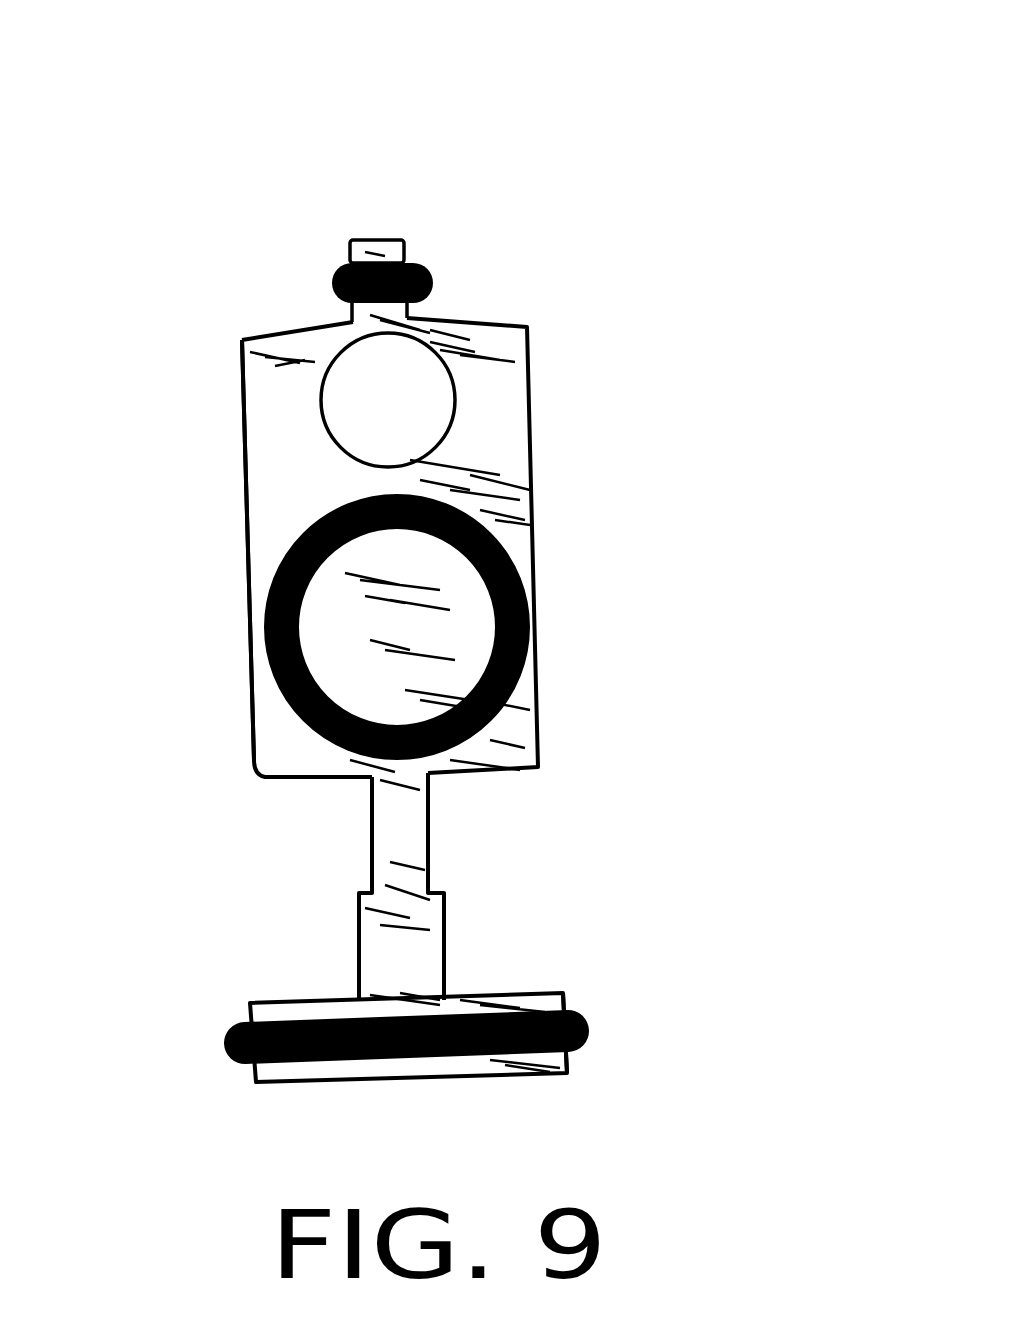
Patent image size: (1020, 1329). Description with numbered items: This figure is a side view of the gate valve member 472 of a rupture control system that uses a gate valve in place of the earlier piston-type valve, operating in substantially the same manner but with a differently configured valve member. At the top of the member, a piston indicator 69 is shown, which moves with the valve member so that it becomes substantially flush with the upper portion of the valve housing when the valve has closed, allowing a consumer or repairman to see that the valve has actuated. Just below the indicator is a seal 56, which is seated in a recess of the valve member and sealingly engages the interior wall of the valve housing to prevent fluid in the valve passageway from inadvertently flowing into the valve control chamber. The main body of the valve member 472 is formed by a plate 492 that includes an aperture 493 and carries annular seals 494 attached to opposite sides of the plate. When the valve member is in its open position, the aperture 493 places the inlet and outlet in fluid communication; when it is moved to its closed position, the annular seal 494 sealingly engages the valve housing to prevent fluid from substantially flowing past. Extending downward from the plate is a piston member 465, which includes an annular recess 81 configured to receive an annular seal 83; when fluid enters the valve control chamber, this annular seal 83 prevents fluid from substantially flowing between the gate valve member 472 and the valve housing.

The piston indicator 69 is at (363, 240).
The seal 56 is at (427, 262).
The aperture 493 is at (428, 365).
The valve member 472 is at (500, 470).
The annular seal 494 is at (537, 617).
The plate 492 is at (247, 572).
The piston member 465 is at (563, 995).
The annular seal 83 is at (593, 1020).
The annular recess 81 is at (570, 1060).